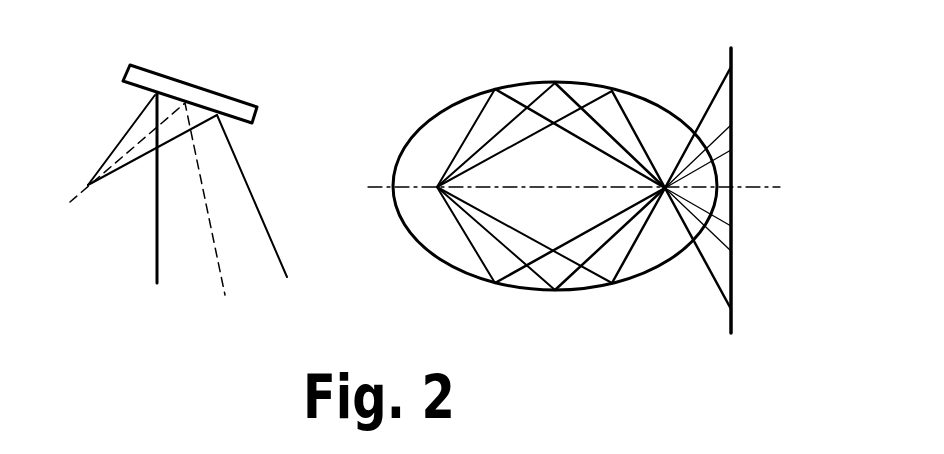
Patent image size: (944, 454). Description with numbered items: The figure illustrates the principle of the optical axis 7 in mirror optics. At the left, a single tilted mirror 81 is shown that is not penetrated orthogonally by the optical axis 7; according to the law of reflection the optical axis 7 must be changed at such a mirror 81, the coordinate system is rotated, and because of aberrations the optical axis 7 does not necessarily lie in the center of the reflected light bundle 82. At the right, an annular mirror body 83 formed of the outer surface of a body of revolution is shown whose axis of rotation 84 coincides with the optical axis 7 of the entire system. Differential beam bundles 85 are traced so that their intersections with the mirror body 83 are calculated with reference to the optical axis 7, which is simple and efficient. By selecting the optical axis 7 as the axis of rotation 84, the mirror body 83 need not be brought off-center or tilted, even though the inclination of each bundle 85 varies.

The optical axis 7 is at (135, 140).
The mirror 81 is at (217, 99).
The reflected light bundle 82 is at (155, 212).
The annular mirror body 83 is at (452, 107).
The axis of rotation 84 is at (418, 190).
The differential beam bundle 85 is at (613, 164).